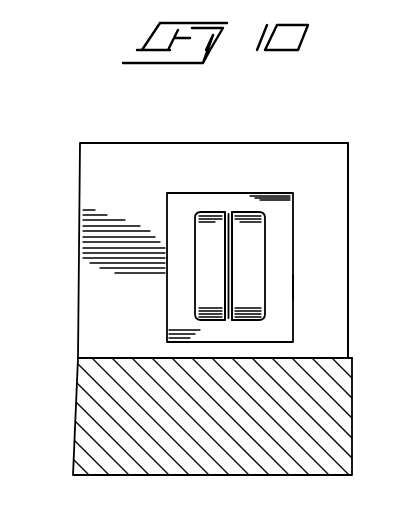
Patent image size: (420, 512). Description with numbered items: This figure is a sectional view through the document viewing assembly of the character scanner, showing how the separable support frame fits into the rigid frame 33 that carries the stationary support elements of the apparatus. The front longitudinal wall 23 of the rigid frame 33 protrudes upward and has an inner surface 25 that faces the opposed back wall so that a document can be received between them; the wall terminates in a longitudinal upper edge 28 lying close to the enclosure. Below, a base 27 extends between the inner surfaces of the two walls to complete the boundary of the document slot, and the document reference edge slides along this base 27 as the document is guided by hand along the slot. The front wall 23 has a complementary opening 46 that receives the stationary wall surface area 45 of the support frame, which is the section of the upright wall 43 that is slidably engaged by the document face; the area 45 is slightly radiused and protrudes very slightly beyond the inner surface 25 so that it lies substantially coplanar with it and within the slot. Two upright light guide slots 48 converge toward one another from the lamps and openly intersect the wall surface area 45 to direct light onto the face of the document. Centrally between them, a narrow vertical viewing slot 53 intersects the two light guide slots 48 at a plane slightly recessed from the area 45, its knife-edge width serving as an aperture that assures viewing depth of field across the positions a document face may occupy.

The front longitudinal wall 23 is at (245, 143).
The inner surface 25 is at (330, 155).
The base 27 is at (137, 358).
The longitudinal upper edge 28 is at (181, 143).
The rigid frame 33 is at (90, 404).
The upright wall 43 is at (254, 172).
The stationary wall surface area 45 is at (291, 243).
The complementary opening 46 is at (293, 290).
The light guide slots 48 is at (197, 262).
The vertical viewing slot 53 is at (232, 300).